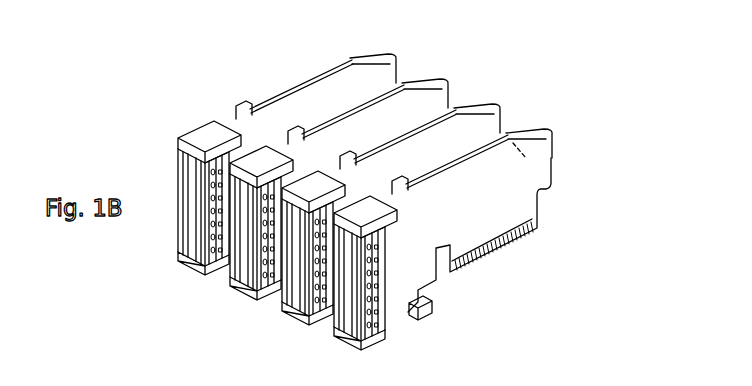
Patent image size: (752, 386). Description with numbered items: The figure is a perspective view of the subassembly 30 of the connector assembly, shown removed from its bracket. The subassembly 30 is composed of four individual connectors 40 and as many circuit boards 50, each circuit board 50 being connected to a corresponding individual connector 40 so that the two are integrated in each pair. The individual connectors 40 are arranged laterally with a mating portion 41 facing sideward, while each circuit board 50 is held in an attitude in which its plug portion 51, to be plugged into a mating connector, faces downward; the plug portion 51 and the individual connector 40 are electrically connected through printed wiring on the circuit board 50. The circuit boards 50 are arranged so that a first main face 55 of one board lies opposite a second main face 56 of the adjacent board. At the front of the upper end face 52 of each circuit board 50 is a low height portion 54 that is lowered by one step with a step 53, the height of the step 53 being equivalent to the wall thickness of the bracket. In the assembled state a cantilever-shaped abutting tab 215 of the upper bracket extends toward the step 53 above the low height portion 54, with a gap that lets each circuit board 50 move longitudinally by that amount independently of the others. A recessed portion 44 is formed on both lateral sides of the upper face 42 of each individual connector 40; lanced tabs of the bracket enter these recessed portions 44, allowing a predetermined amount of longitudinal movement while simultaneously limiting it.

The subassembly 30 is at (508, 43).
The abutting tab 215 is at (415, 5).
The individual connector 40 is at (237, 113).
The mating portion 41 is at (243, 194).
The upper face 42 is at (201, 129).
The recessed portion 44 is at (375, 196).
The circuit board 50 is at (373, 100).
The plug portion 51 is at (498, 246).
The upper end face 52 is at (312, 82).
The step 53 is at (288, 108).
The low height portion 54 is at (268, 108).
The first main face 55 is at (473, 121).
The second main face 56 is at (503, 133).